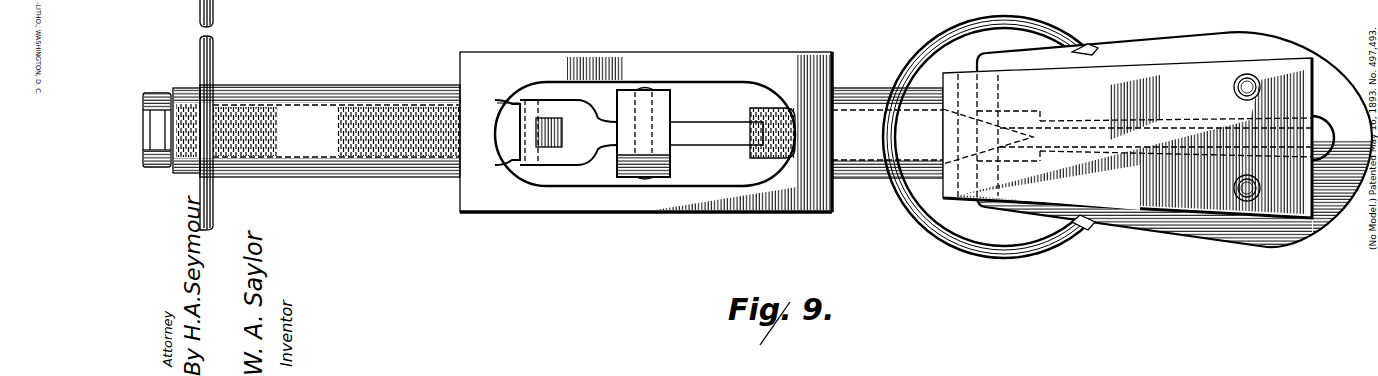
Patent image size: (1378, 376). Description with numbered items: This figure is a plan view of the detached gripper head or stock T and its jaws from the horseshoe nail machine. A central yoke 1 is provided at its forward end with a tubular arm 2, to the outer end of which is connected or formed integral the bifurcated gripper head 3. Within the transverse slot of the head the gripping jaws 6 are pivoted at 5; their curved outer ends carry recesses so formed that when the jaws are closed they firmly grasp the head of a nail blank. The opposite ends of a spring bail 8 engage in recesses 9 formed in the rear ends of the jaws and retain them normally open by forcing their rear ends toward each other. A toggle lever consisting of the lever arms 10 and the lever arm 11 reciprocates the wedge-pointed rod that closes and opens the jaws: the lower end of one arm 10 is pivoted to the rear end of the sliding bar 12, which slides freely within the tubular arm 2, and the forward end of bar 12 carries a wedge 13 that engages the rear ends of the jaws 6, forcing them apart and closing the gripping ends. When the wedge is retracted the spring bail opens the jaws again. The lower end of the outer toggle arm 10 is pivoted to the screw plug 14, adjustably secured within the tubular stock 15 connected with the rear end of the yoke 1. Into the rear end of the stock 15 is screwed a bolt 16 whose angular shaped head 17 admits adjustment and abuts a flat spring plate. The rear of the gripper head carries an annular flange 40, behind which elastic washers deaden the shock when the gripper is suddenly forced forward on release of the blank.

The central yoke 1 is at (646, 132).
The tubular arm 2 is at (887, 126).
The bifurcated gripper head 3 is at (1138, 138).
The pivots 5 is at (1234, 87).
The gripping jaws 6 is at (1335, 218).
The spring bail 8 is at (1004, 146).
The recesses 9 is at (1100, 40).
The lever arms 10 is at (641, 132).
The lever arm 11 is at (657, 140).
The sliding bar 12 is at (760, 108).
The wedge 13 is at (990, 130).
The screw plug 14 is at (400, 178).
The tubular arm or stock 15 is at (333, 85).
The bolt 16 is at (256, 176).
The angular shaped head 17 is at (163, 92).
The annular flange 40 is at (216, 42).
The gripper head or stock T is at (841, 42).